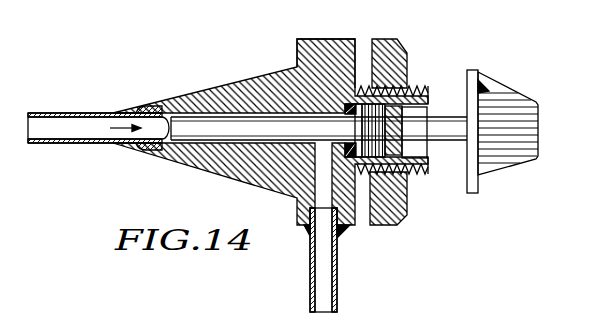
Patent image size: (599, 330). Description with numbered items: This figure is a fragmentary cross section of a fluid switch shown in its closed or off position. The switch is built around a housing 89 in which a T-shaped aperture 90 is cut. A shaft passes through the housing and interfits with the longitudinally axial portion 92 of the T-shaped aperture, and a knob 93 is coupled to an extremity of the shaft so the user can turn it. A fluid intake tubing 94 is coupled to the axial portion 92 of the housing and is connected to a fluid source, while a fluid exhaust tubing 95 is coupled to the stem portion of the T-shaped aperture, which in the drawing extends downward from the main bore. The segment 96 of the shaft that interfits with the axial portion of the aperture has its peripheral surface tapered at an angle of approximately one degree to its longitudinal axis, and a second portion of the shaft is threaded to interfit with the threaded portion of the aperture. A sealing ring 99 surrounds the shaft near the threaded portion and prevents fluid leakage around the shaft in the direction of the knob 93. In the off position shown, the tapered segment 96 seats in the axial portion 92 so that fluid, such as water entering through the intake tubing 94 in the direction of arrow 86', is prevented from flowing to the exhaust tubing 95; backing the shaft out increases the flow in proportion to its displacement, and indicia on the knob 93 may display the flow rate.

The direction of fluid flow arrow 86' is at (103, 112).
The housing 89 is at (310, 50).
The T-shaped aperture 90 is at (322, 183).
The longitudinally axial portion of the T-shaped aperture 92 is at (157, 154).
The knob 93 is at (507, 110).
The fluid intake tubing 94 is at (68, 144).
The fluid exhaust tubing 95 is at (337, 261).
The segment of shaft 96 is at (232, 128).
The sealing ring 99 is at (357, 86).